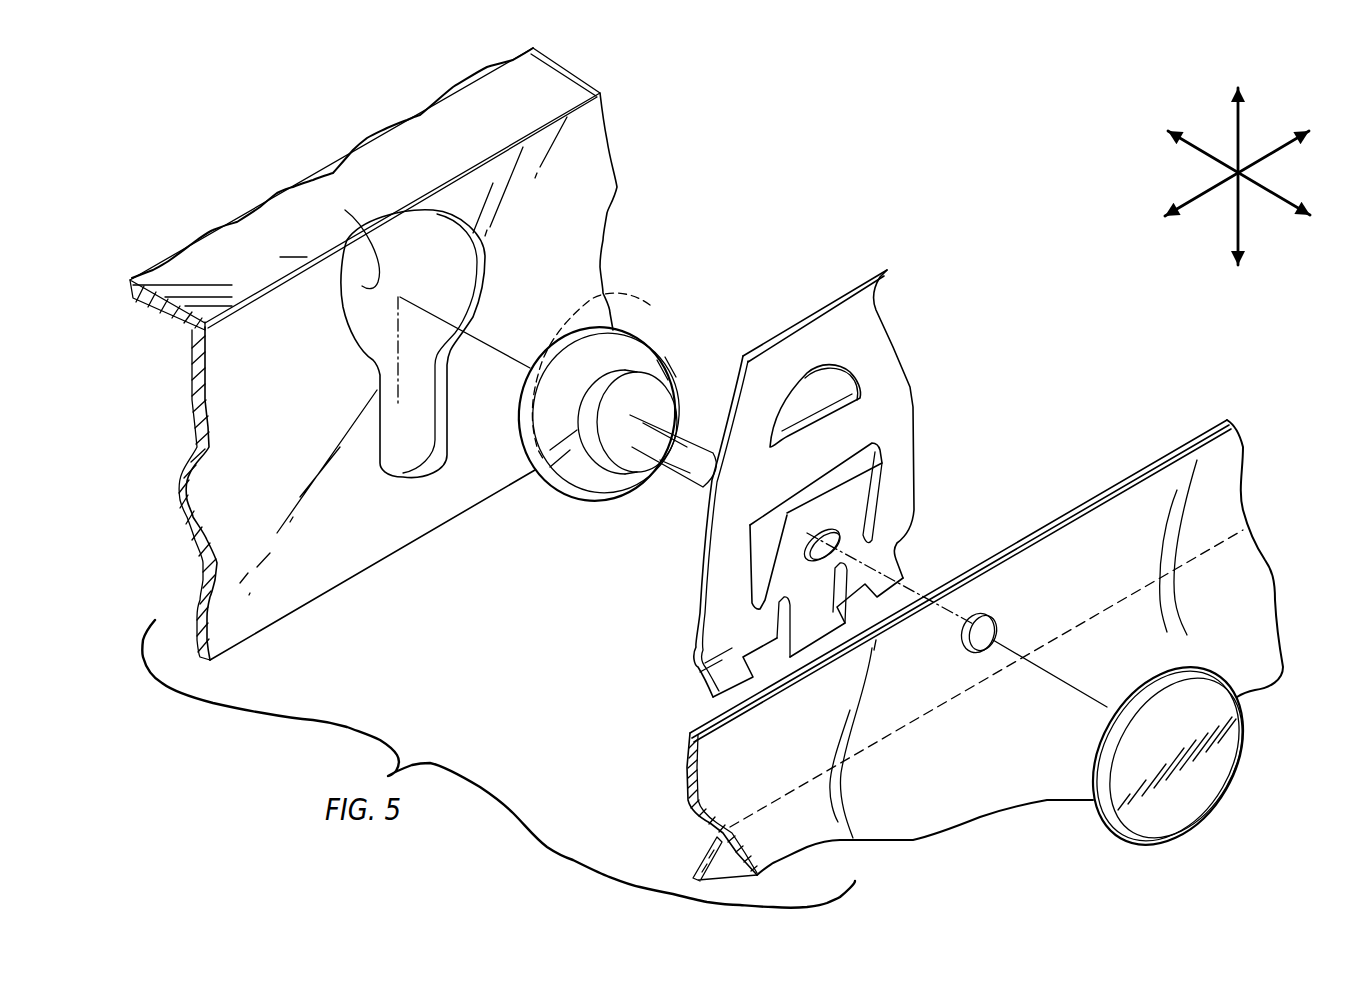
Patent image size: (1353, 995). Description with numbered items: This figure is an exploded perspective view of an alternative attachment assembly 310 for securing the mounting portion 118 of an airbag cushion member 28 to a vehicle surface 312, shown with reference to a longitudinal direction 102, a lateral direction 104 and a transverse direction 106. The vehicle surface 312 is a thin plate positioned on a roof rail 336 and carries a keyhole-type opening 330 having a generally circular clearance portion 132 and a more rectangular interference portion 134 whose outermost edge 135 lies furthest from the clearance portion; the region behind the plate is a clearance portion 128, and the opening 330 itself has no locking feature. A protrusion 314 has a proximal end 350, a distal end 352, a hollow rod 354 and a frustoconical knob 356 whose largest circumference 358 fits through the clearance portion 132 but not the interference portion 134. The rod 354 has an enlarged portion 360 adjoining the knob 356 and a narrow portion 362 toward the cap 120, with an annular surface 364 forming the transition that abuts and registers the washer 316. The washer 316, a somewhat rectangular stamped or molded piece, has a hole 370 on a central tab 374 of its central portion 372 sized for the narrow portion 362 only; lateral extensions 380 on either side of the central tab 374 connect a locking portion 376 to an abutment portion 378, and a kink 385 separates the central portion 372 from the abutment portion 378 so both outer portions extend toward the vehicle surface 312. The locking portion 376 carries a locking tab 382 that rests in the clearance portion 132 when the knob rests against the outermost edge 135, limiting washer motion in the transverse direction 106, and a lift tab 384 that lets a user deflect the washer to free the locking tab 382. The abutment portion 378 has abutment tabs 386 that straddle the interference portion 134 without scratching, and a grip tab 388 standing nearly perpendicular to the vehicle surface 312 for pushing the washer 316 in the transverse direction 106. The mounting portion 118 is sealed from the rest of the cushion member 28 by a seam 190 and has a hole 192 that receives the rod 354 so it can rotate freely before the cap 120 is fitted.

The cushion member 28 is at (696, 853).
The longitudinal direction 102 is at (1283, 203).
The lateral direction 104 is at (1198, 200).
The transverse direction 106 is at (1237, 117).
The mounting portion 118 is at (940, 600).
The cap 120 is at (1190, 785).
The clearance portion 128 is at (416, 396).
The clearance portion 132 is at (341, 242).
The interference portion 134 is at (413, 440).
The outermost edge 135 is at (425, 485).
The seam 190 is at (917, 722).
The hole 192 is at (998, 625).
The attachment assembly 310 is at (945, 208).
The vehicle surface 312 is at (616, 158).
The protrusion 314 is at (806, 466).
The washer 316 is at (928, 385).
The opening 330 is at (448, 205).
The roof rail 336 is at (420, 354).
The proximal end 350 is at (700, 527).
The distal end 352 is at (597, 407).
The rod 354 is at (568, 464).
The knob 356 is at (524, 464).
The largest circumference 358 is at (605, 302).
The enlarged portion 360 is at (633, 378).
The narrow portion 362 is at (636, 560).
The annular surface 364 is at (622, 467).
The hole 370 is at (836, 538).
The central portion 372 is at (906, 456).
The central tab 374 is at (862, 483).
The locking portion 376 is at (881, 322).
The abutment portion 378 is at (681, 683).
The lateral extensions 380 is at (890, 483).
The locking tab 382 is at (806, 357).
The lift tab 384 is at (843, 294).
The kink 385 is at (690, 648).
The abutment tabs 386 is at (908, 575).
The grip tab 388 is at (812, 655).